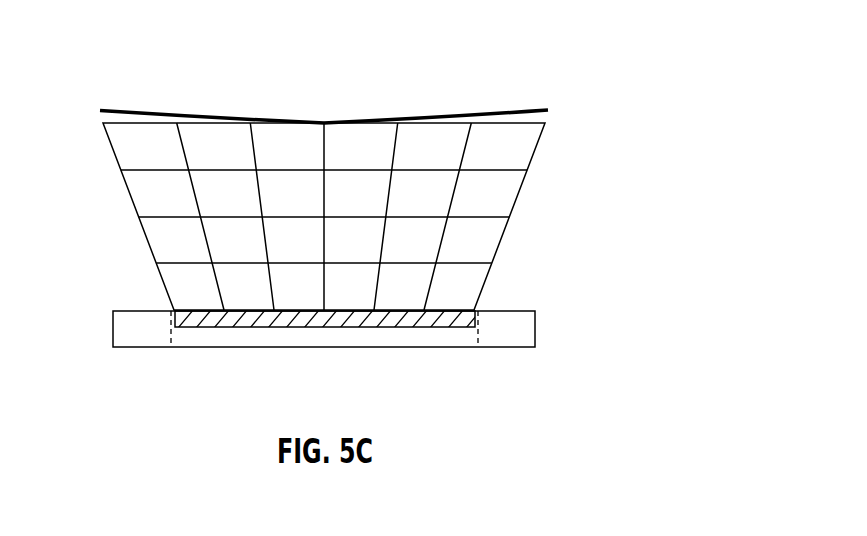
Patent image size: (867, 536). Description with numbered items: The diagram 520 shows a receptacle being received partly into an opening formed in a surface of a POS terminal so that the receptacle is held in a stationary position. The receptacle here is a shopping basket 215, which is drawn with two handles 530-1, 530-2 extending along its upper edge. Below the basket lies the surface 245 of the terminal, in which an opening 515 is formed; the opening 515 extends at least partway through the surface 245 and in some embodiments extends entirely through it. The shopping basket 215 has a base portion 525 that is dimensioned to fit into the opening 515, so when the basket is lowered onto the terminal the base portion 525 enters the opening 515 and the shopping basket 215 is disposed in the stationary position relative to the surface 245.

The diagram 520 is at (633, 32).
The shopping basket 215 is at (516, 206).
The handle 530-1 is at (190, 111).
The handle 530-2 is at (465, 111).
The surface 245 is at (522, 306).
The opening 515 is at (463, 330).
The base portion 525 is at (236, 311).